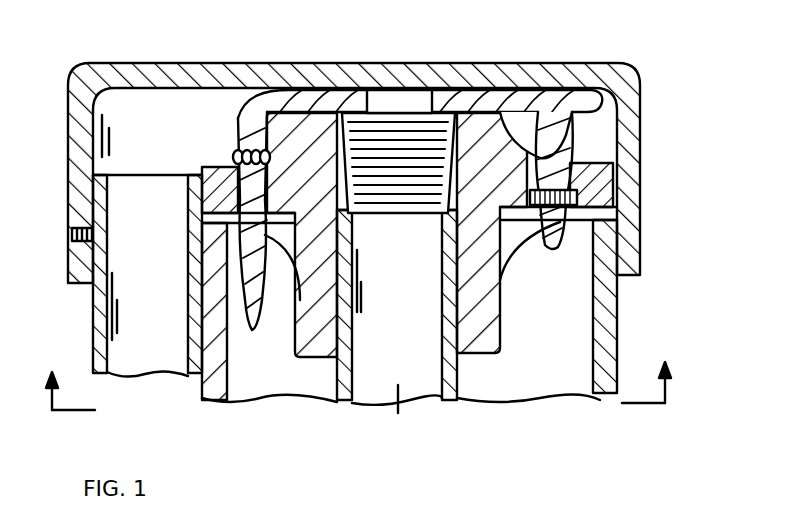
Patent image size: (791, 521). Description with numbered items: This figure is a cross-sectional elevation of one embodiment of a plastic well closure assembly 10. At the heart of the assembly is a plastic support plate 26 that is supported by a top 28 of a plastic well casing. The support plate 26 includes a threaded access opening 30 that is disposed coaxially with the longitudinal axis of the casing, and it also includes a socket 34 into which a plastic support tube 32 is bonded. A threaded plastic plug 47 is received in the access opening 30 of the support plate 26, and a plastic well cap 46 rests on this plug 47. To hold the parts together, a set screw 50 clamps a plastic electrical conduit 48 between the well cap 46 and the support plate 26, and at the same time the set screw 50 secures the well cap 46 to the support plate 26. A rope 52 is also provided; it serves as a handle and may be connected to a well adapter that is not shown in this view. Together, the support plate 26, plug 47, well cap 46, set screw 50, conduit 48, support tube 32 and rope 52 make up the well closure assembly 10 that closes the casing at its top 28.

The plastic well closure assembly 10 is at (627, 44).
The plastic well cap 46 is at (632, 63).
The plastic electrical conduit 48 is at (132, 378).
The set screw 50 is at (80, 260).
The plastic support plate 26 is at (502, 340).
The top of the well casing 28 is at (600, 207).
The plastic support tube 32 is at (462, 376).
The socket 34 is at (350, 375).
The threaded access opening 30 is at (443, 112).
The threaded plastic plug 47 is at (393, 100).
The rope 52 is at (247, 105).